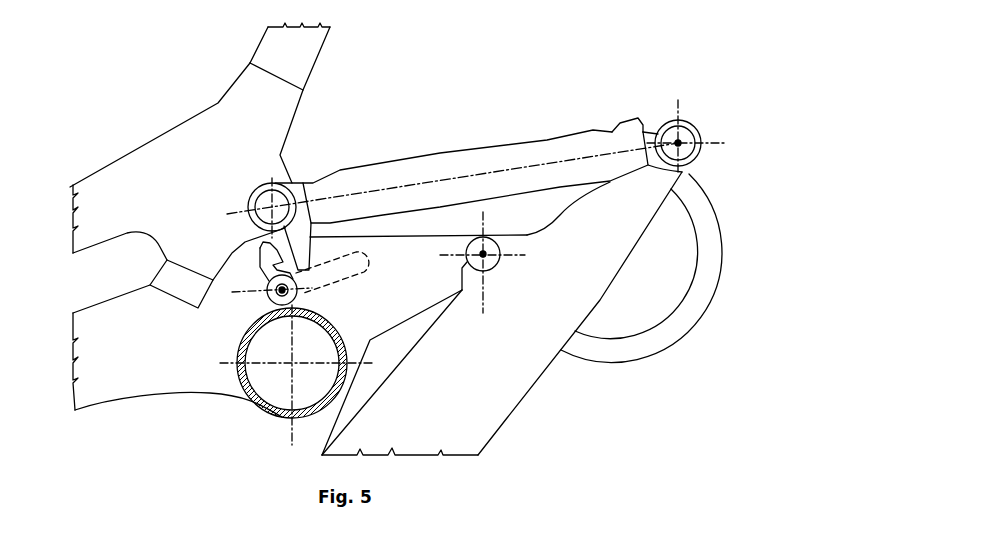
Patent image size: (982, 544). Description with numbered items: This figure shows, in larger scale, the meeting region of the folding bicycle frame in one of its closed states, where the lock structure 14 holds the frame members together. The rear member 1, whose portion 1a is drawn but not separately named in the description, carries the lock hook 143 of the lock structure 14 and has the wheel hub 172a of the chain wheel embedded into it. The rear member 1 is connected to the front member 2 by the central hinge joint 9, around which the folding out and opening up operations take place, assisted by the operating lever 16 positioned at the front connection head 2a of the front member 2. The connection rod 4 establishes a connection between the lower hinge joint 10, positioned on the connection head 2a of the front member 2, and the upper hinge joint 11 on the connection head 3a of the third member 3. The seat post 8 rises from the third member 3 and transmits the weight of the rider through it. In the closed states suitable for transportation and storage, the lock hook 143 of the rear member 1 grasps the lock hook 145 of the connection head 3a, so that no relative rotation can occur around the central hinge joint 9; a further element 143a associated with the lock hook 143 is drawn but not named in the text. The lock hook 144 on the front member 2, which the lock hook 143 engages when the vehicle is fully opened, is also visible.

The rear member 1 is at (112, 323).
The frame bracket 1a is at (388, 292).
The front member 2 is at (507, 420).
The front connection head 2a is at (605, 238).
The third member 3 is at (115, 177).
The third connection head 3a is at (196, 130).
The connection rod 4 is at (553, 142).
The seat post 8 is at (262, 46).
The central hinge joint 9 is at (483, 254).
The lower hinge joint 10 is at (678, 143).
The upper hinge joint 11 is at (272, 207).
The lock structure 14 is at (282, 290).
The operating lever 16 is at (693, 323).
The lock hook 143 is at (262, 265).
The hook open position 143a is at (347, 265).
The lock hook 144 is at (627, 125).
The lock hook 145 is at (297, 248).
The wheel hub 172a is at (292, 363).